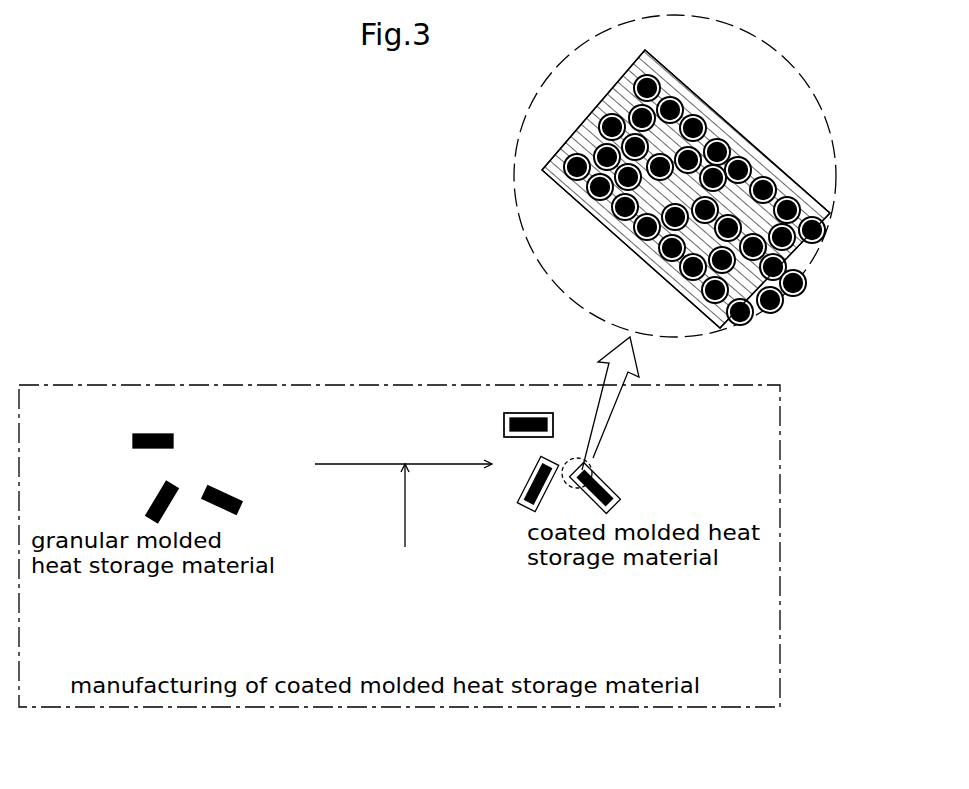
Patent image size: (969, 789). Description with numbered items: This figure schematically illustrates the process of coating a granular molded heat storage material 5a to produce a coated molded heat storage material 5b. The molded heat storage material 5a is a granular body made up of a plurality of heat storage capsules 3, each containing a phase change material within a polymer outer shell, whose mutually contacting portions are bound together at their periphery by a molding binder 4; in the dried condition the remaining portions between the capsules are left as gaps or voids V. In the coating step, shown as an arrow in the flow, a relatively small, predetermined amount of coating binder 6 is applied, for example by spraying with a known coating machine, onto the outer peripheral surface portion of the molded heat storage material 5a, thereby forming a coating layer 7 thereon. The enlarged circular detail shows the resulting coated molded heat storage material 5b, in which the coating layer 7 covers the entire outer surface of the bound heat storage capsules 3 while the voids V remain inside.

The heat storage capsule 3 is at (597, 110).
The molding binder 4 is at (764, 178).
The molded heat storage material 5a is at (155, 500).
The coated molded heat storage material 5b is at (537, 163).
The coating binder 6 is at (406, 533).
The coating layer 7 is at (718, 130).
The voids V is at (700, 136).